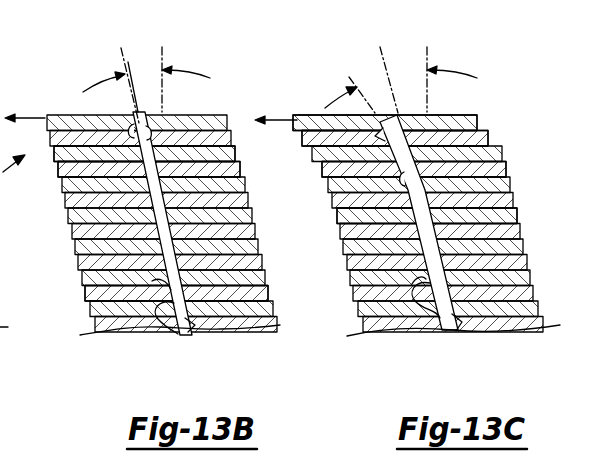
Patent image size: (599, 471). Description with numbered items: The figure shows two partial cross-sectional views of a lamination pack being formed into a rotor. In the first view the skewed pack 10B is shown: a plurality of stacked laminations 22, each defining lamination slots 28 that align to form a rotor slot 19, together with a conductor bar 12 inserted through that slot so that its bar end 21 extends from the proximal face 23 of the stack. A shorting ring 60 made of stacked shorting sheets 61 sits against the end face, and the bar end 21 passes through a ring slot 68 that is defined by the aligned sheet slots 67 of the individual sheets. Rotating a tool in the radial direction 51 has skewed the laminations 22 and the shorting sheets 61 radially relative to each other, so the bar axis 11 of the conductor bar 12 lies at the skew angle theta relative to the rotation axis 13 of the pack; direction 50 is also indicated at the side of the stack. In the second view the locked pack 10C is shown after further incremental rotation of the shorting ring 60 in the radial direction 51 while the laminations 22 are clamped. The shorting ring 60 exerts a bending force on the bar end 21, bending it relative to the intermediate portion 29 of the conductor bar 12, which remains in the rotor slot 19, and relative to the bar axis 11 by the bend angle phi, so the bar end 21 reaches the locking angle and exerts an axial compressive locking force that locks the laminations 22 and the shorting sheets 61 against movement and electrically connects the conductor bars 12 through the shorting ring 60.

In FIG. 13B, the skewed pack 10B is at (254, 196).
In FIG. 13C, the locked pack 10C is at (327, 197).
In FIG. 13B, the bar axis 11 is at (119, 50).
In FIG. 13C, the bar axis 11 is at (379, 50).
In FIG. 13B, the conductor bar 12 is at (152, 281).
In FIG. 13C, the conductor bar 12 is at (426, 279).
In FIG. 13B, the rotation axis 13 is at (164, 53).
In FIG. 13C, the rotation axis 13 is at (429, 53).
In FIG. 13B, the rotor slot 19 is at (190, 322).
In FIG. 13C, the rotor slot 19 is at (458, 320).
In FIG. 13B, the bar end 21 is at (133, 113).
In FIG. 13C, the bar end 21 is at (424, 134).
In FIG. 13B, the lamination 22 is at (67, 197).
In FIG. 13C, the lamination 22 is at (333, 200).
In FIG. 13B, the proximal face 23 is at (208, 160).
In FIG. 13C, the proximal face 23 is at (473, 160).
In FIG. 13B, the lamination slot 28 is at (164, 333).
In FIG. 13C, the lamination slot 28 is at (438, 300).
In FIG. 13B, the intermediate portion 29 is at (192, 294).
In FIG. 13C, the intermediate portion 29 is at (436, 219).
In FIG. 13B, the shear direction 50 is at (3, 172).
In FIG. 13B, the radial direction 51 is at (28, 118).
In FIG. 13C, the radial direction 51 is at (277, 120).
In FIG. 13C, the shorting ring 60 is at (499, 121).
In FIG. 13B, the shorting sheet 61 is at (54, 151).
In FIG. 13C, the shorting sheet 61 is at (489, 139).
In FIG. 13B, the sheet slot 67 is at (148, 130).
In FIG. 13C, the sheet slot 67 is at (379, 133).
In FIG. 13B, the ring slot 68 is at (132, 129).
In FIG. 13C, the ring slot 68 is at (400, 160).